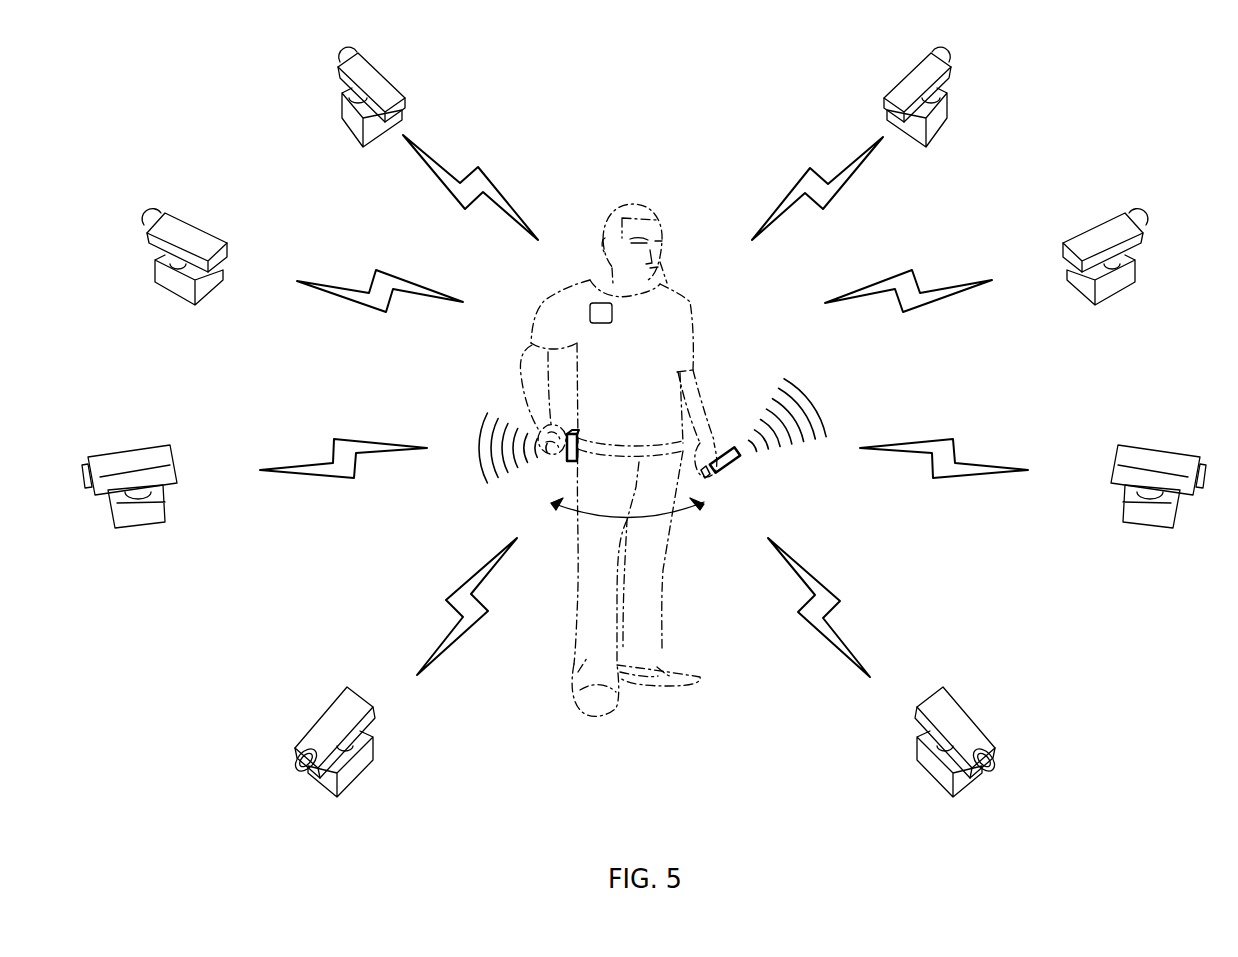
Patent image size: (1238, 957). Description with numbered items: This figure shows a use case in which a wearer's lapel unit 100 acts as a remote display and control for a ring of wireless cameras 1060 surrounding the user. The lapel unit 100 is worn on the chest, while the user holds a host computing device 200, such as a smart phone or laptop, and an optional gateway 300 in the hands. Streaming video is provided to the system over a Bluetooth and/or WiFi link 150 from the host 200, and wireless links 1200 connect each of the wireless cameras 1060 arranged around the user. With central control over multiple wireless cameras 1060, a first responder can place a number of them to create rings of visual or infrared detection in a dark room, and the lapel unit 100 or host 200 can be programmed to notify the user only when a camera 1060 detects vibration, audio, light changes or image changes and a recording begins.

The lapel unit 100 is at (592, 303).
The Bluetooth and/or WiFi link 150 is at (683, 518).
The host computing device 200 is at (733, 463).
The gateway 300 is at (567, 457).
The wireless camera 1060 is at (330, 715).
The wireless communication link 1200 is at (452, 648).